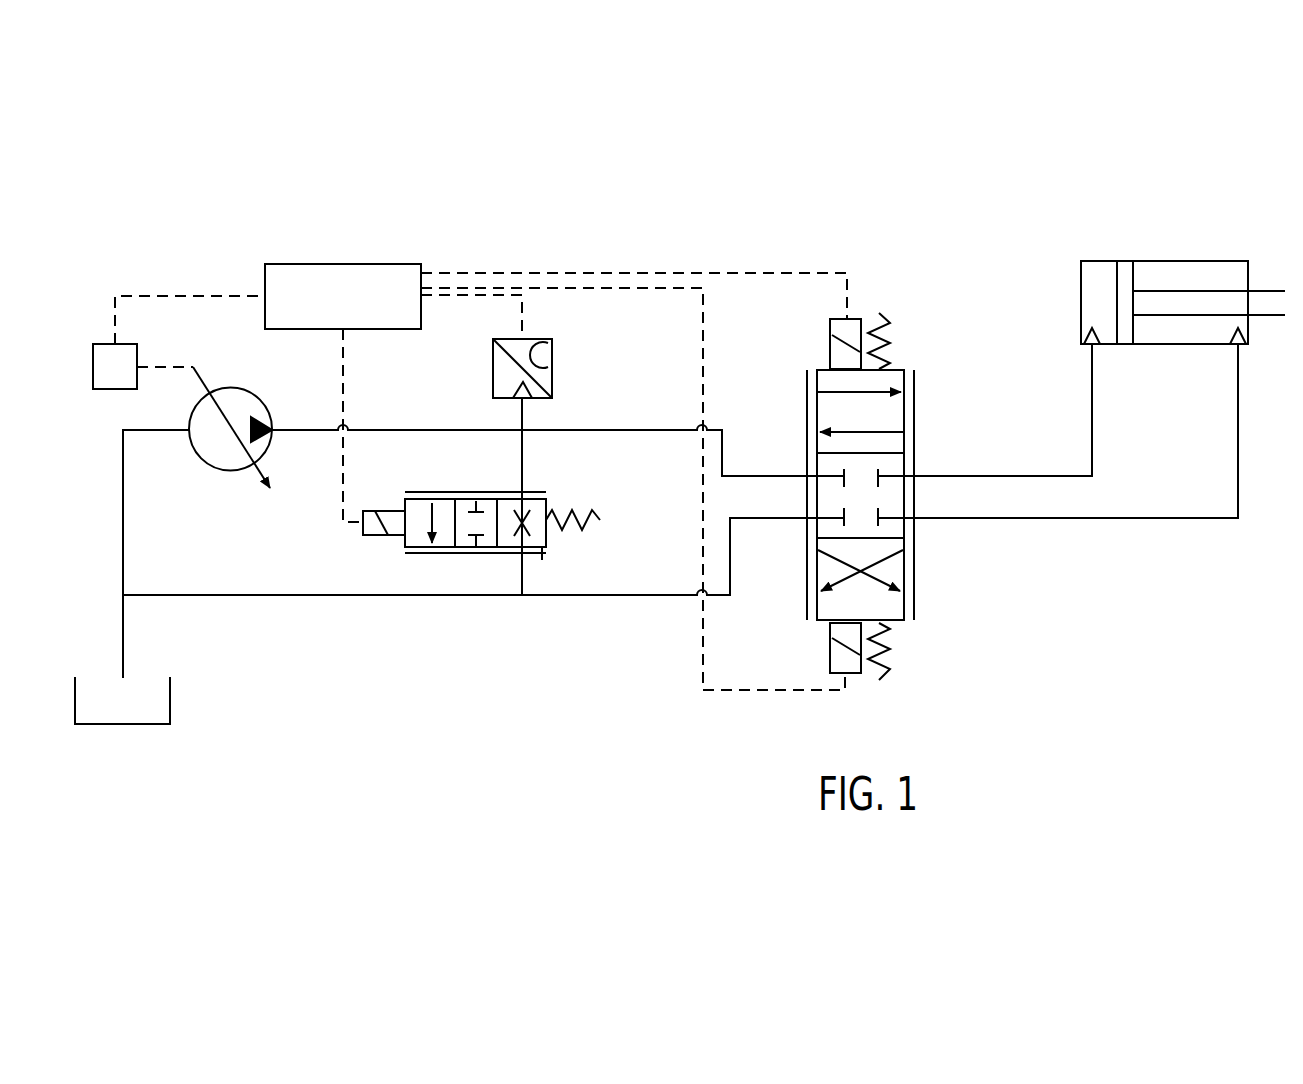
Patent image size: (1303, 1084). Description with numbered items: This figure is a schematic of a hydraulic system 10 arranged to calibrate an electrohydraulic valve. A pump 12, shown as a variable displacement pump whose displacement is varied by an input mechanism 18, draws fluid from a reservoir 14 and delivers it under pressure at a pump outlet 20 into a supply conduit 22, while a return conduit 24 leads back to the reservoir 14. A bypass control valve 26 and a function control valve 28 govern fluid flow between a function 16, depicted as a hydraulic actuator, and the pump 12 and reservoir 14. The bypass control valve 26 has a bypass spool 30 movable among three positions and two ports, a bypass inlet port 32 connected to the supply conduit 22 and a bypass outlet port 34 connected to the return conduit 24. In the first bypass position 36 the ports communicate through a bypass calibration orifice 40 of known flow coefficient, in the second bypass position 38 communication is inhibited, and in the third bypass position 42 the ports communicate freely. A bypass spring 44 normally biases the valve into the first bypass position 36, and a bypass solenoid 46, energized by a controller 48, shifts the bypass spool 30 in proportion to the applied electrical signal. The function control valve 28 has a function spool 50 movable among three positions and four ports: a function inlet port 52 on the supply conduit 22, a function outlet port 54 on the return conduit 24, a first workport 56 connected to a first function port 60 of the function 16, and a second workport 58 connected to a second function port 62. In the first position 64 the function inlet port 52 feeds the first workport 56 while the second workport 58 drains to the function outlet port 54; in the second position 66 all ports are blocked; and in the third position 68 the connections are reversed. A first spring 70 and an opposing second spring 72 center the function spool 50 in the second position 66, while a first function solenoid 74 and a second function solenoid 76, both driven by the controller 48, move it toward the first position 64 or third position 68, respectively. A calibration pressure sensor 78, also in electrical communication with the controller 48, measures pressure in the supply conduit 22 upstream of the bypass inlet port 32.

The hydraulic system 10 is at (448, 220).
The pump 12 is at (230, 471).
The reservoir 14 is at (170, 700).
The function 16 is at (1172, 250).
The input mechanism 18 is at (93, 366).
The pump outlet 20 is at (274, 428).
The supply conduit 22 is at (436, 428).
The return conduit 24 is at (445, 597).
The bypass control valve 26 is at (499, 514).
The function control valve 28 is at (882, 490).
The bypass spool 30 is at (530, 523).
The bypass inlet port 32 is at (525, 496).
The bypass outlet port 34 is at (520, 550).
The first bypass position 36 is at (468, 486).
The second bypass position 38 is at (509, 486).
The bypass calibration orifice 40 is at (542, 569).
The third bypass position 42 is at (427, 560).
The bypass spring 44 is at (599, 520).
The bypass solenoid 46 is at (386, 535).
The controller 48 is at (342, 264).
The function spool 50 is at (899, 621).
The function inlet port 52 is at (813, 476).
The function outlet port 54 is at (813, 518).
The first workport 56 is at (908, 476).
The second workport 58 is at (908, 518).
The first function port 60 is at (1096, 346).
The second function port 62 is at (1236, 347).
The first position 64 is at (928, 406).
The second position 66 is at (926, 490).
The third position 68 is at (926, 574).
The first spring 70 is at (882, 319).
The second spring 72 is at (884, 672).
The first function solenoid 74 is at (832, 319).
The second function solenoid 76 is at (832, 648).
The calibration pressure sensor 78 is at (552, 357).